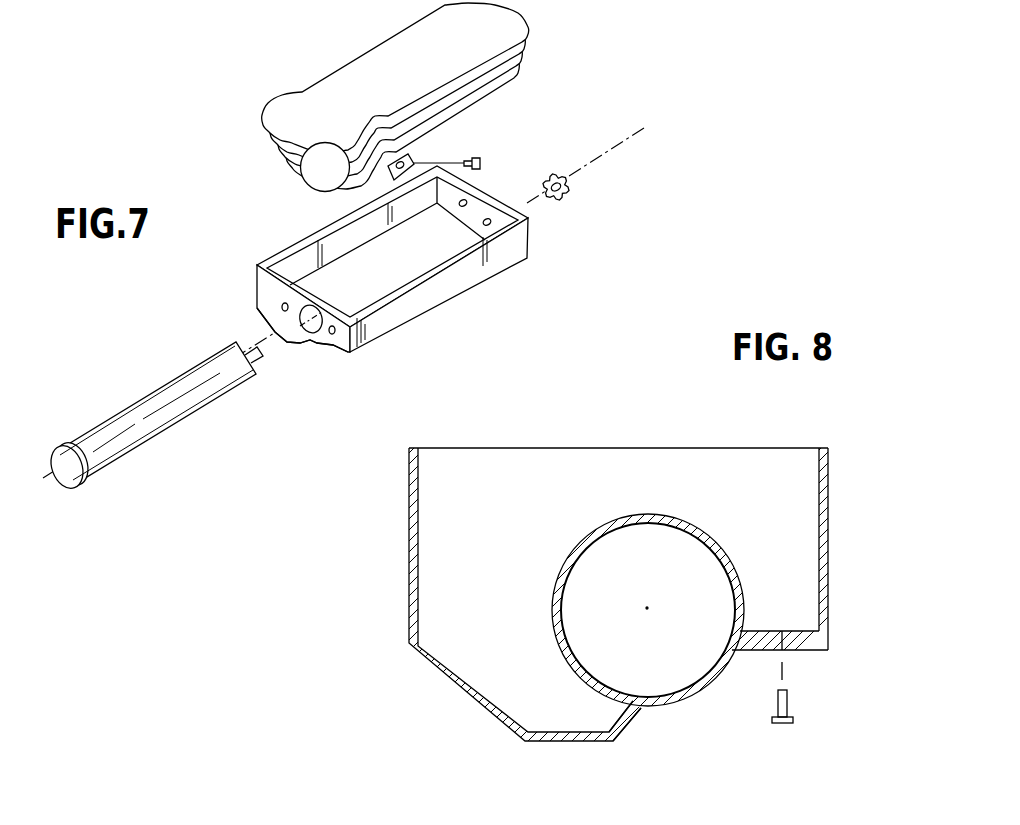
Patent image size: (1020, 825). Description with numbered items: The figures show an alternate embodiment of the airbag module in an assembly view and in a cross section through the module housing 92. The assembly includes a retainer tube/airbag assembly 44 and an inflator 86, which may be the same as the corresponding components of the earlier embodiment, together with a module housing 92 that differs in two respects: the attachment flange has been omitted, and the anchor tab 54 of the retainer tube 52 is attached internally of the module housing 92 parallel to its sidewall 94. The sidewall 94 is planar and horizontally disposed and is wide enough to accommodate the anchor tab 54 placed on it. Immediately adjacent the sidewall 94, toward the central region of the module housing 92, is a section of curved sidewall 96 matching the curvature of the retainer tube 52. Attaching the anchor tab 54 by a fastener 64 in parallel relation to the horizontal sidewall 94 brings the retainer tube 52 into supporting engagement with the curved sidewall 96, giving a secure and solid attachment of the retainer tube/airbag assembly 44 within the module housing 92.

In FIG. 7, the retainer tube/airbag assembly 44 is at (288, 177).
In FIG. 7, the anchor tab 54 is at (428, 151).
In FIG. 8, the anchor tab 54 is at (757, 631).
In FIG. 7, the module housing 92 is at (447, 275).
In FIG. 7, the sidewall 94 is at (338, 354).
In FIG. 8, the sidewall 94 is at (800, 652).
In FIG. 7, the inflator 86 is at (125, 422).
In FIG. 8, the retainer tube 52 is at (733, 557).
In FIG. 8, the curved sidewall 96 is at (694, 700).
In FIG. 8, the screw 64 is at (793, 722).